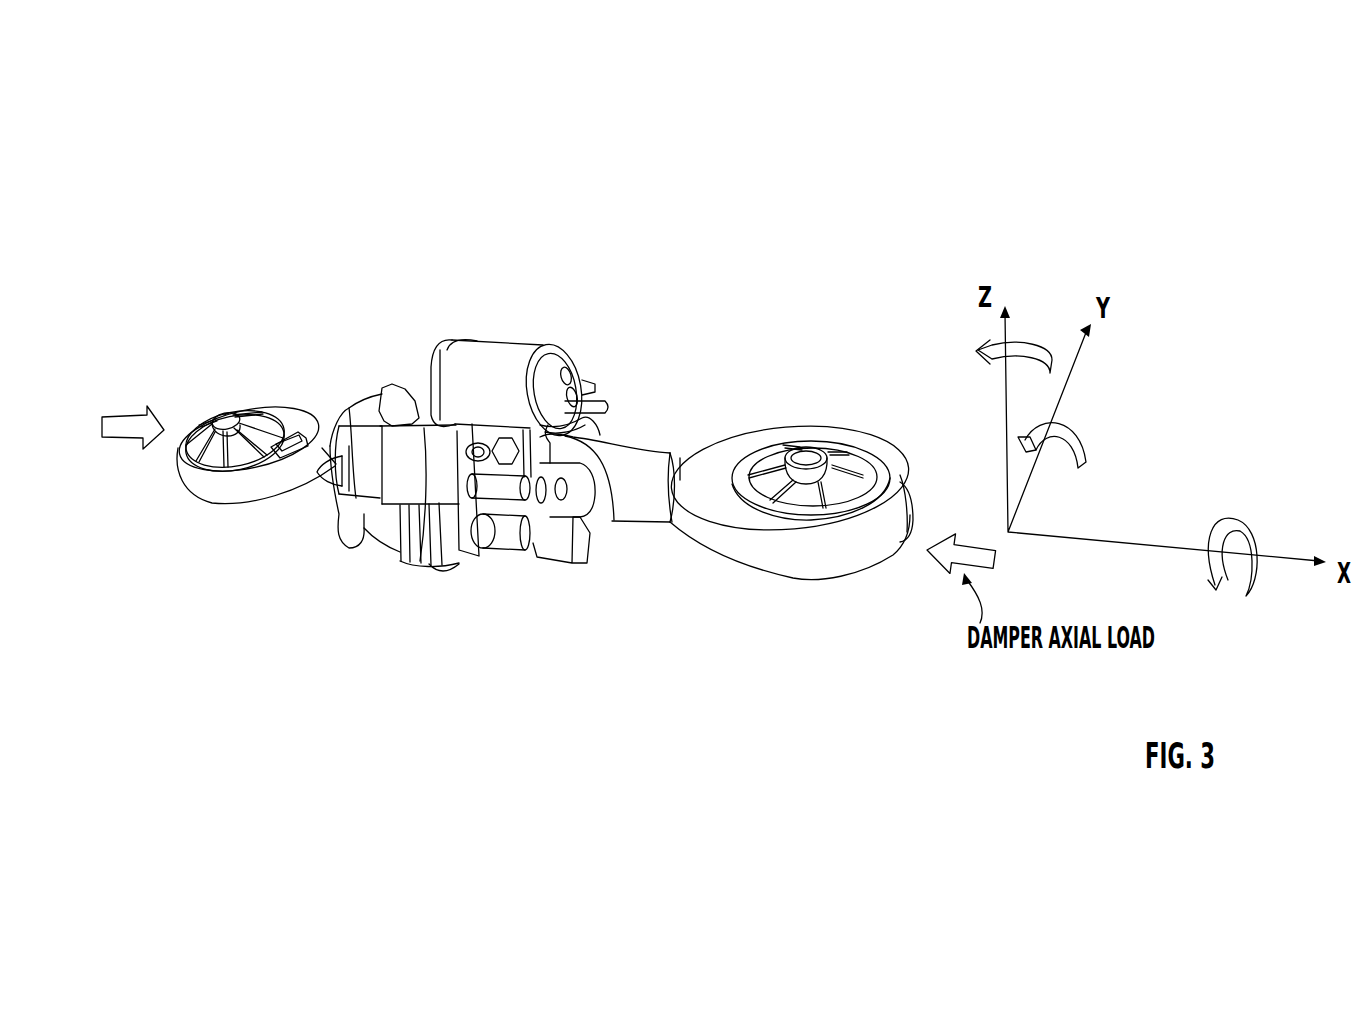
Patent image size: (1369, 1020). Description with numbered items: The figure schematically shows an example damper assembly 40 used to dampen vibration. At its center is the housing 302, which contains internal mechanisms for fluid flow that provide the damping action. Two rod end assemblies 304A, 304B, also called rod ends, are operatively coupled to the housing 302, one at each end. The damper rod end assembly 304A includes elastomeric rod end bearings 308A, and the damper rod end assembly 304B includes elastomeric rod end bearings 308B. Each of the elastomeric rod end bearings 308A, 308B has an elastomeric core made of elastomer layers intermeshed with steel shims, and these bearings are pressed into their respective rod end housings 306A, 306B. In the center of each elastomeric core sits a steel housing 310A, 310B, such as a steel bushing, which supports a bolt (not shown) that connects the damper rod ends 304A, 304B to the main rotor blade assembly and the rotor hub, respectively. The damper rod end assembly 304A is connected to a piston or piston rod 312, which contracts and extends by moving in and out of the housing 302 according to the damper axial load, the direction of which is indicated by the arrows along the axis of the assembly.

The damper assembly 40 is at (491, 171).
The housing 302 is at (614, 520).
The damper rod end assembly 304A is at (172, 500).
The damper rod end assembly 304B is at (860, 607).
The rod end housing 306A is at (223, 488).
The rod end housing 306B is at (823, 548).
The elastomeric rod end bearings 308A is at (265, 418).
The elastomeric rod end bearings 308B is at (864, 478).
The steel housing 310A is at (224, 412).
The steel housing 310B is at (801, 447).
The piston rod 312 is at (340, 455).